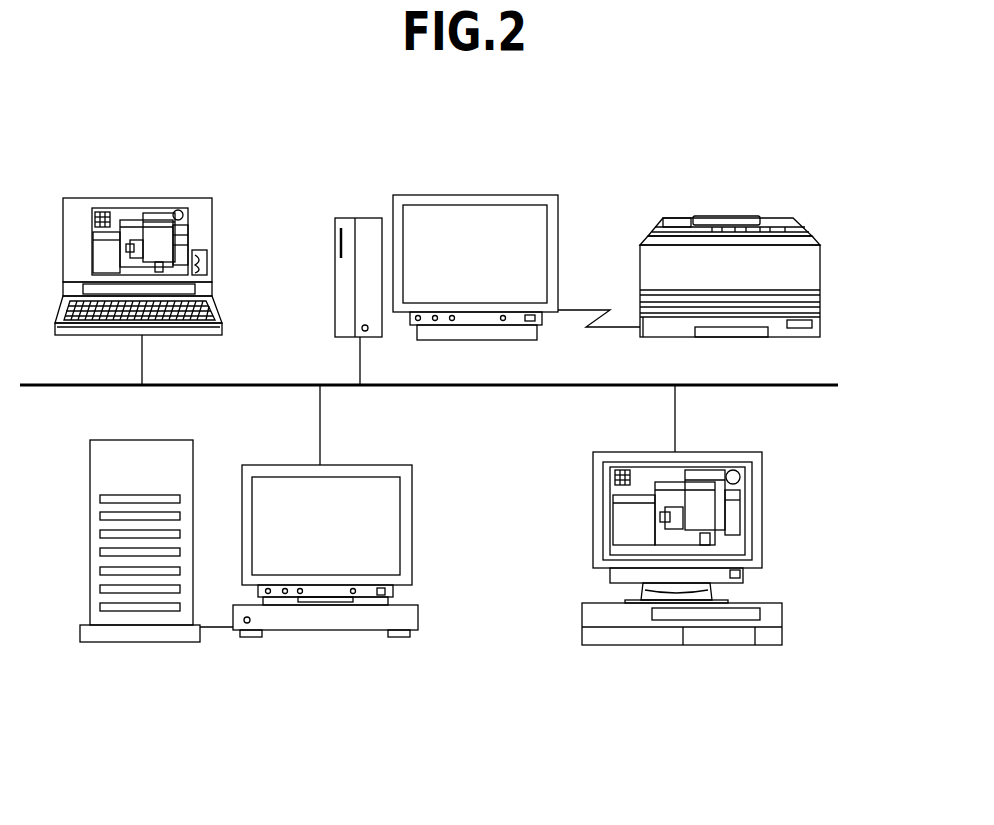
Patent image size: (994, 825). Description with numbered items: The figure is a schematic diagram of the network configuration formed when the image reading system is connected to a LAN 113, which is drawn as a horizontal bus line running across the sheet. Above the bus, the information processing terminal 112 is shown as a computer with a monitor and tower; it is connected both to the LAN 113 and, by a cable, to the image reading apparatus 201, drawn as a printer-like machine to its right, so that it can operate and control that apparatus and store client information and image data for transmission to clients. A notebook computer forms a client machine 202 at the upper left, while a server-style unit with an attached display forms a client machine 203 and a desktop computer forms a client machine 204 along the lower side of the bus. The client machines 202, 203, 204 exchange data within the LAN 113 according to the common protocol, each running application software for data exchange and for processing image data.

The information processing terminal 112 is at (477, 195).
The LAN 113 is at (770, 383).
The image reading apparatus 201 is at (680, 218).
The client machine 202 is at (128, 198).
The client machine 203 is at (178, 642).
The client machine 204 is at (630, 645).